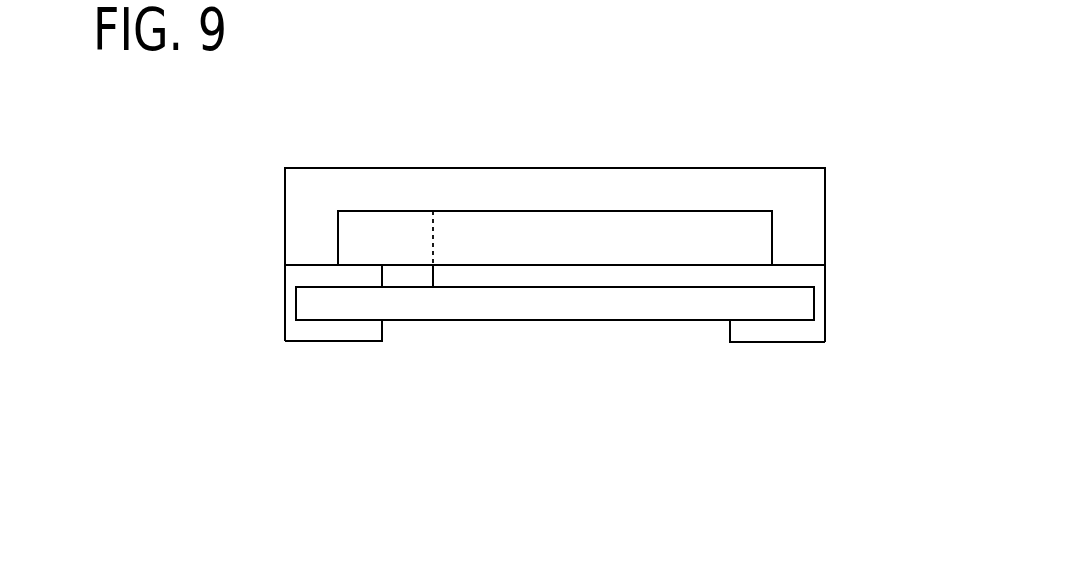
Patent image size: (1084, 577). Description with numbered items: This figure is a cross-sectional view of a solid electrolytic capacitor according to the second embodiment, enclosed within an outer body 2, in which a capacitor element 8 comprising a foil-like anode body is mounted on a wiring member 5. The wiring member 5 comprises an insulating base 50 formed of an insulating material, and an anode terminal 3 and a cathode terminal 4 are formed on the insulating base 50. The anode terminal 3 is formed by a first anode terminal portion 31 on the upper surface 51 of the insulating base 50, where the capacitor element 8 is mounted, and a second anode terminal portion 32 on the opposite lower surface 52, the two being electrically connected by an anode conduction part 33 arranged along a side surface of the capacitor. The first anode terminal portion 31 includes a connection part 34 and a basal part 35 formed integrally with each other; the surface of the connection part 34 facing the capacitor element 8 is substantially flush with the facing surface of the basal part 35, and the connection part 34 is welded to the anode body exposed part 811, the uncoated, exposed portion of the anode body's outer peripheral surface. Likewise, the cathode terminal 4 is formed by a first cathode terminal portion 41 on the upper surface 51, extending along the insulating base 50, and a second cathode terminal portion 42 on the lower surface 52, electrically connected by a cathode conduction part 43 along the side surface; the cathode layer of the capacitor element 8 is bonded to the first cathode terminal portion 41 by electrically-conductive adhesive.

The case 2 is at (743, 192).
The capacitor element 8 is at (582, 228).
The anode body exposed part 811 is at (383, 233).
The anode terminal 3 is at (150, 358).
The first anode terminal portion 31 is at (213, 273).
The connection part 34 is at (364, 274).
The basal part 35 is at (317, 275).
The anode conduction part 33 is at (292, 300).
The second anode terminal portion 32 is at (332, 328).
The cathode terminal 4 is at (908, 368).
The first cathode terminal portion 41 is at (793, 277).
The cathode conduction part 43 is at (816, 306).
The second cathode terminal portion 42 is at (795, 332).
The wiring member 5 is at (652, 308).
The insulating base 50 is at (582, 308).
The upper surface 51 is at (398, 278).
The lower surface 52 is at (477, 318).